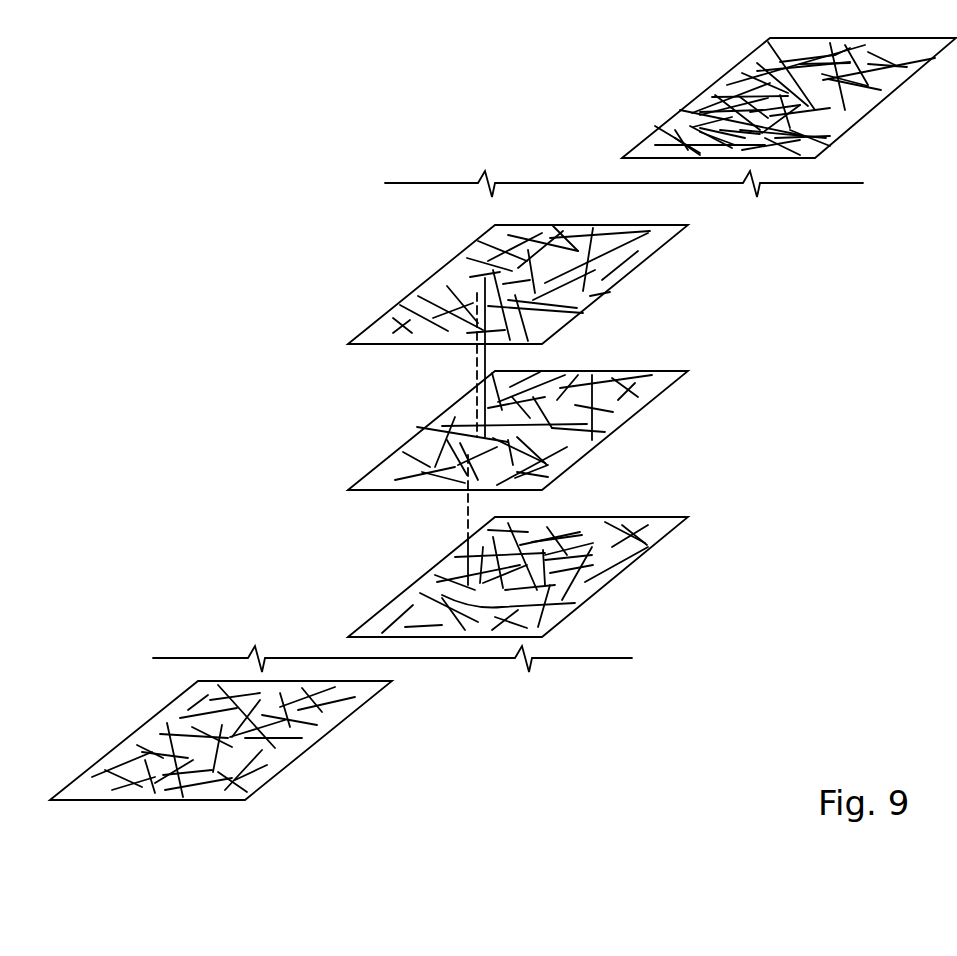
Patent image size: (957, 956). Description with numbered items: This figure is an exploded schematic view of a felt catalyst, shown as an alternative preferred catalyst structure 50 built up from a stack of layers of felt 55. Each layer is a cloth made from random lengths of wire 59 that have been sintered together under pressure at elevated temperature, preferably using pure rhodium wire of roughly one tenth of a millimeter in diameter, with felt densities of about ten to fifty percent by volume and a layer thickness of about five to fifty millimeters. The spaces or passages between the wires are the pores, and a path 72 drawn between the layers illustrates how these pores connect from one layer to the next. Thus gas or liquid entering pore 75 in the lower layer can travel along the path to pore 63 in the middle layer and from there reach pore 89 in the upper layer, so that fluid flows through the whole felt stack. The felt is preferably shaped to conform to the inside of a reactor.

The catalyst structure 50 is at (620, 98).
The layers of felt 55 is at (518, 284).
The wire 59 is at (593, 298).
The pore 63 is at (605, 437).
The path 72 is at (466, 513).
The pore 75 is at (462, 585).
The pore 89 is at (483, 280).